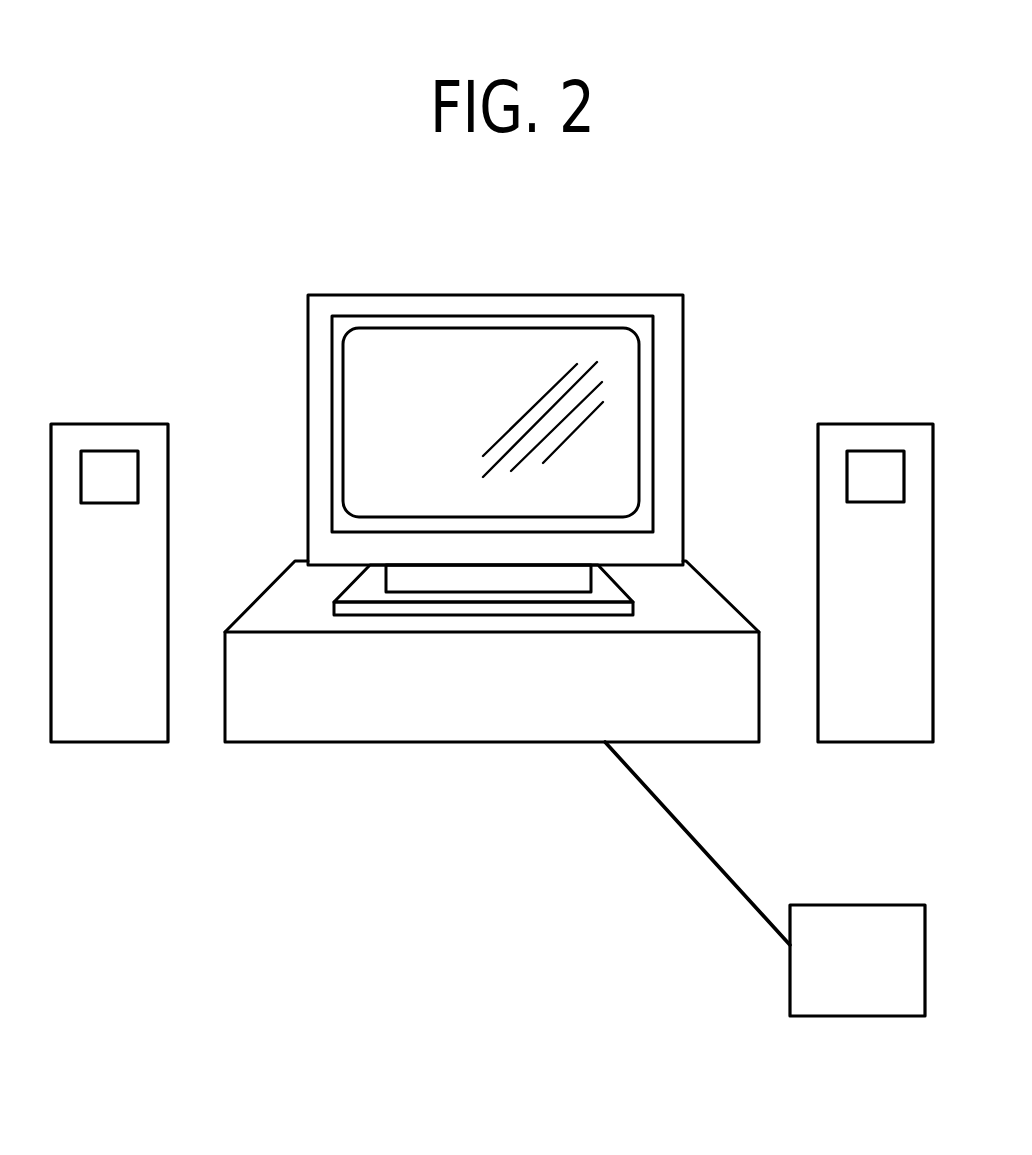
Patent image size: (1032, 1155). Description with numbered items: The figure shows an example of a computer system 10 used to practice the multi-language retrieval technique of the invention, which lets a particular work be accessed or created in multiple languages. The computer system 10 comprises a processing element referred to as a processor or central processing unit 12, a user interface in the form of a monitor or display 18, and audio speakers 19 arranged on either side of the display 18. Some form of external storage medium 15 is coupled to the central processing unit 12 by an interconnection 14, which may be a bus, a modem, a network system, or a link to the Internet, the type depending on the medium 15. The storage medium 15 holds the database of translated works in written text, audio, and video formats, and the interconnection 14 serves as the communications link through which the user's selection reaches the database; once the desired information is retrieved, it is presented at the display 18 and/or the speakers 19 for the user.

The computer system 10 is at (818, 278).
The central processing unit 12 is at (496, 707).
The interconnection 14 is at (692, 840).
The external storage medium 15 is at (873, 974).
The display 18 is at (486, 403).
The audio speakers 19 is at (122, 686).